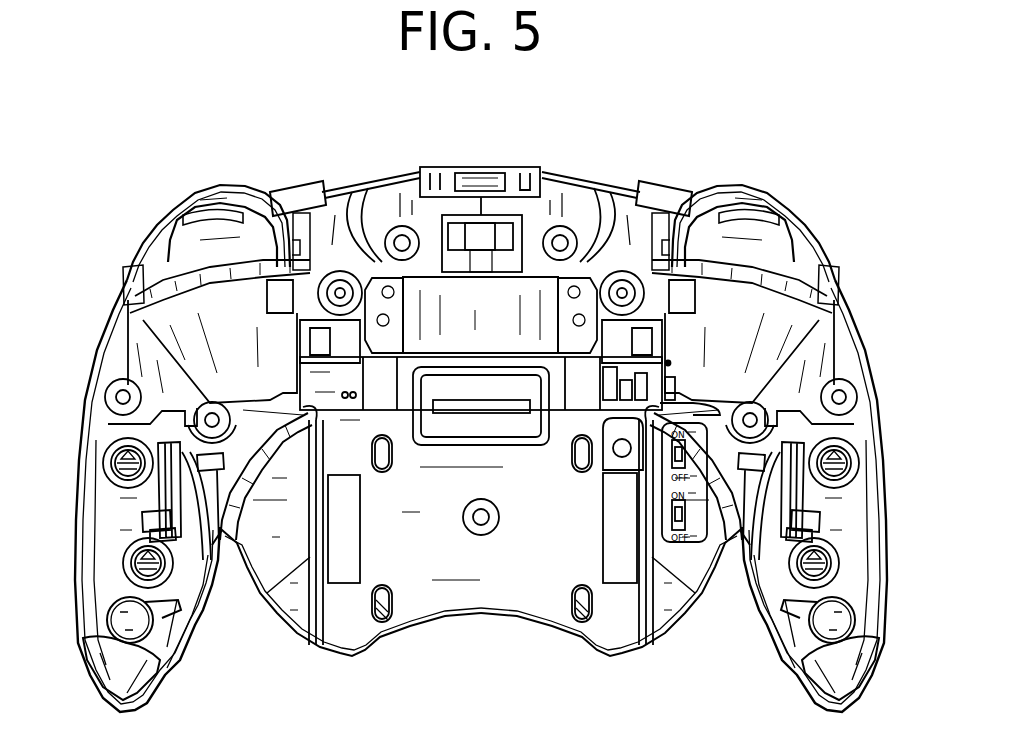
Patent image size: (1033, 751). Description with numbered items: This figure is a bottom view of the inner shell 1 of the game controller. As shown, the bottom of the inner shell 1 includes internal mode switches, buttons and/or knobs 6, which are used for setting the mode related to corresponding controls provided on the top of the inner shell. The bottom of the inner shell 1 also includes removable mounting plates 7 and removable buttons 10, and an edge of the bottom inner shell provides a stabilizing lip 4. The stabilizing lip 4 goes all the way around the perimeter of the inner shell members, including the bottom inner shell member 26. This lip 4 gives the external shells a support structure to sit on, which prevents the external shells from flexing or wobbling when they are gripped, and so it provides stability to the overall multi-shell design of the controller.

The inner shell 1 is at (863, 272).
The stabilizing lip 4 is at (890, 607).
The internal mode switches, buttons and/or knobs 6 is at (120, 466).
The removable mounting plates 7 is at (219, 318).
The removable buttons 10 is at (221, 210).
The bottom inner shell member 26 is at (420, 612).